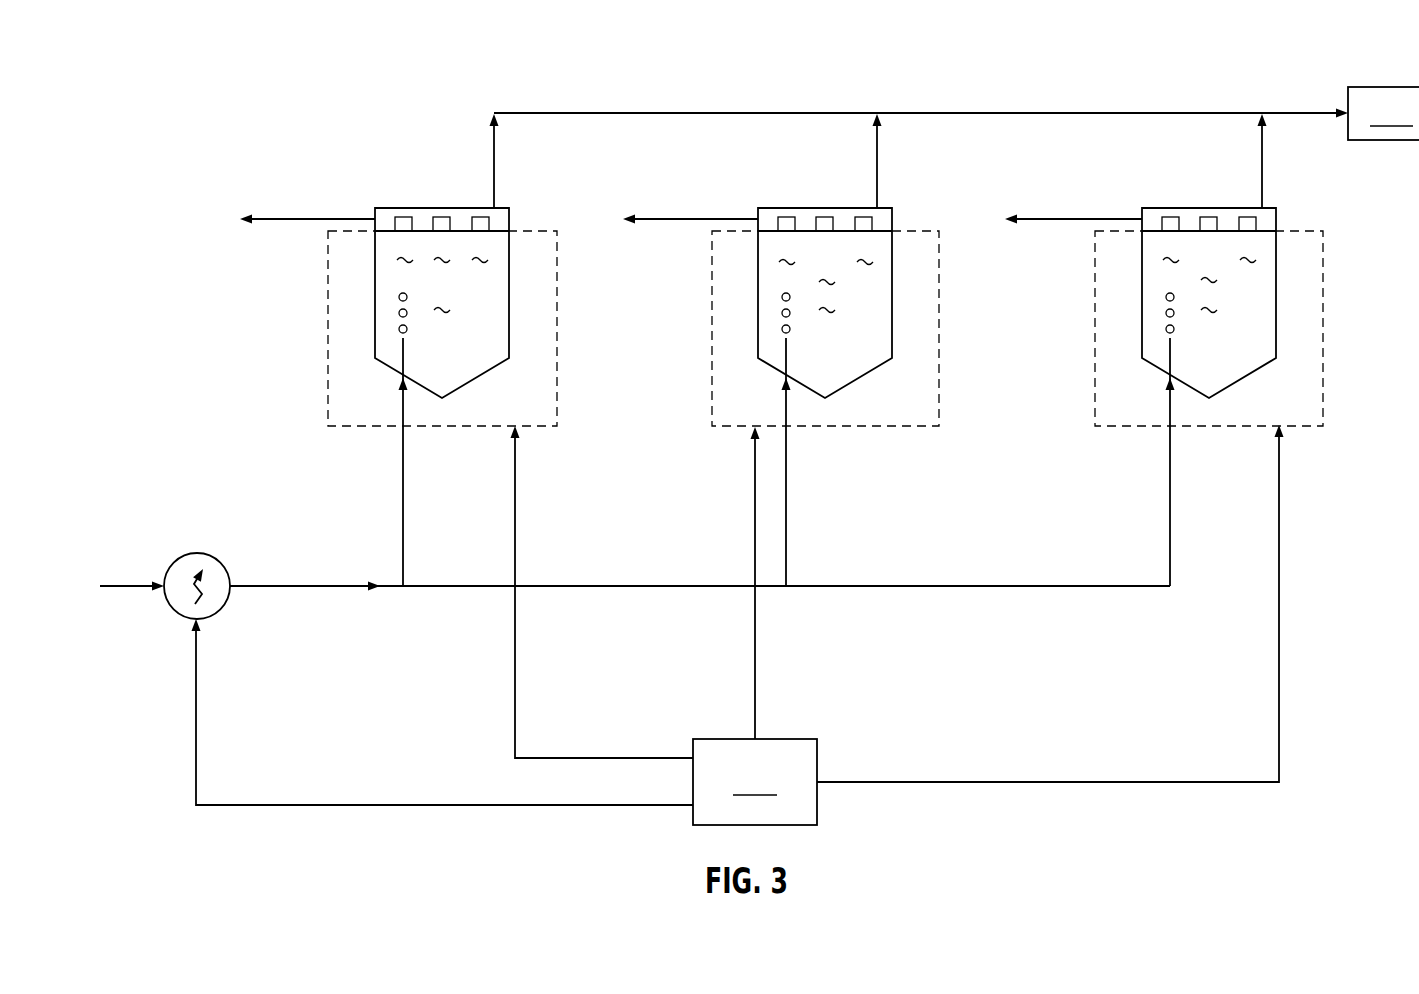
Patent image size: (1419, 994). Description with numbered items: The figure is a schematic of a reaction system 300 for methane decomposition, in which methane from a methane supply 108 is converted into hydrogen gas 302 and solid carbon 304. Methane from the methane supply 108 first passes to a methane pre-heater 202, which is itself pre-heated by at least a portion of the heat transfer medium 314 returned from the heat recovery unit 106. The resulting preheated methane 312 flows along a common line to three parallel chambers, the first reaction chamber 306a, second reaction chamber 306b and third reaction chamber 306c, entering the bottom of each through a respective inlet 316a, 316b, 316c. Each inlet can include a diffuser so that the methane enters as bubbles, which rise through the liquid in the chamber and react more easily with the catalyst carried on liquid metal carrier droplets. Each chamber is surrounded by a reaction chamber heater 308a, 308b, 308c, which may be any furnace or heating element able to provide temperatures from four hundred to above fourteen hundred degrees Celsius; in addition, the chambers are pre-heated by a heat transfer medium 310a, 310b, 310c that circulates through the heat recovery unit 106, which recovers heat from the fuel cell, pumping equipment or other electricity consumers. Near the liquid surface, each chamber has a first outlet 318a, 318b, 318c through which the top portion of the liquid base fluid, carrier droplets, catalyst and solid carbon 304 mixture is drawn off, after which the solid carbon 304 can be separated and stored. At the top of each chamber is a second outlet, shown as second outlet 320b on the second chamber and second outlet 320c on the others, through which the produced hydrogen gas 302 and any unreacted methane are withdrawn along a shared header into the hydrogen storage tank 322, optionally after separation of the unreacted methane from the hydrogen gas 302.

The reaction system 300 is at (154, 92).
The hydrogen gas 302 is at (1068, 112).
The hydrogen storage tank 322 is at (1383, 113).
The second outlet 320c is at (495, 167).
The second outlet 320b is at (879, 167).
The first reaction chamber 306a is at (383, 208).
The second reaction chamber 306b is at (763, 207).
The third reaction chamber 306c is at (1147, 208).
The solid carbon 304 is at (490, 223).
The reaction chamber heater 308a is at (328, 310).
The reaction chamber heater 308b is at (712, 310).
The reaction chamber heater 308c is at (1095, 312).
The first outlet 318a is at (275, 218).
The first outlet 318b is at (670, 217).
The first outlet 318c is at (1057, 218).
The inlet 316a is at (402, 393).
The inlet 316b is at (788, 398).
The inlet 316c is at (1170, 392).
The preheated methane 312 is at (320, 588).
The methane supply 108 is at (120, 583).
The methane pre-heater 202 is at (220, 560).
The heat transfer medium 314 is at (195, 712).
The heat transfer medium 310a is at (515, 693).
The heat transfer medium 310b is at (755, 673).
The heat transfer medium 310c is at (1280, 700).
The heat recovery unit 106 is at (755, 782).